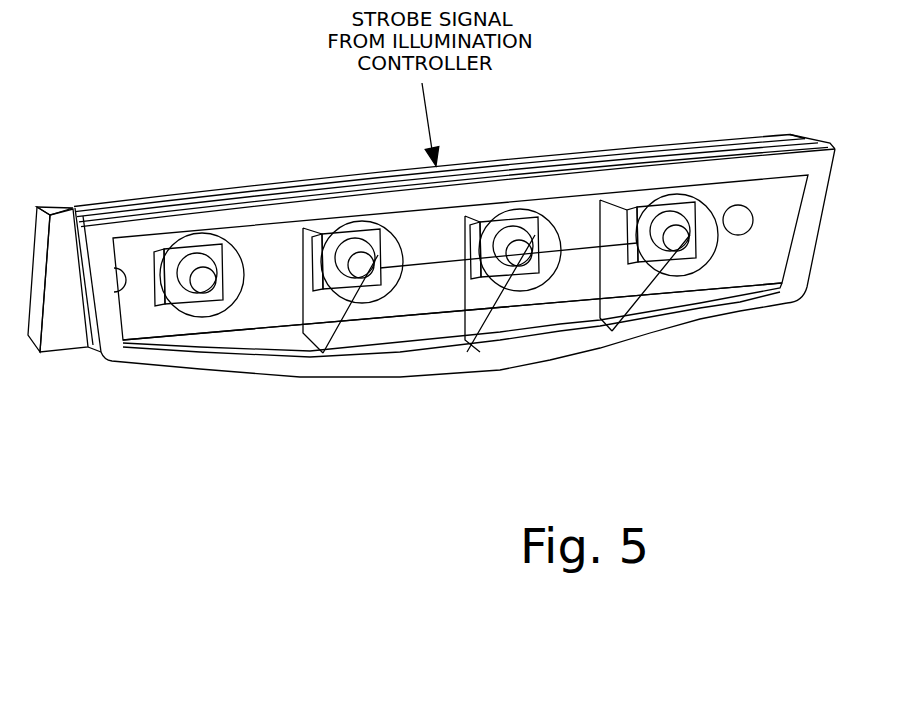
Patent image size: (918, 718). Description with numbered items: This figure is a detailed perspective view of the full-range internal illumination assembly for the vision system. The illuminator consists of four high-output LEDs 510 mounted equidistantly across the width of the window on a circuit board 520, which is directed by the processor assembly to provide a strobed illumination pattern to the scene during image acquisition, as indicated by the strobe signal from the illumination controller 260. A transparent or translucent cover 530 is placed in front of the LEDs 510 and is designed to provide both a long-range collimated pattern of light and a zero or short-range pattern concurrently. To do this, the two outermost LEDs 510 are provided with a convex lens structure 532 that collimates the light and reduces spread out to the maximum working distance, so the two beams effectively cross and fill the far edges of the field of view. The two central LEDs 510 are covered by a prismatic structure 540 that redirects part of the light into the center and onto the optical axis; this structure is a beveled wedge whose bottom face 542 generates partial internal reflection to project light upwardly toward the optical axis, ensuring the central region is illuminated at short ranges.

The illumination light strip 260 is at (702, 130).
The high-output LEDs 510 is at (200, 268).
The circuit board 520 is at (64, 236).
The transparent cover 530 is at (258, 362).
The convex lens structure 532 is at (193, 323).
The prismatic structure 540 is at (372, 337).
The bottom face 542 is at (577, 313).